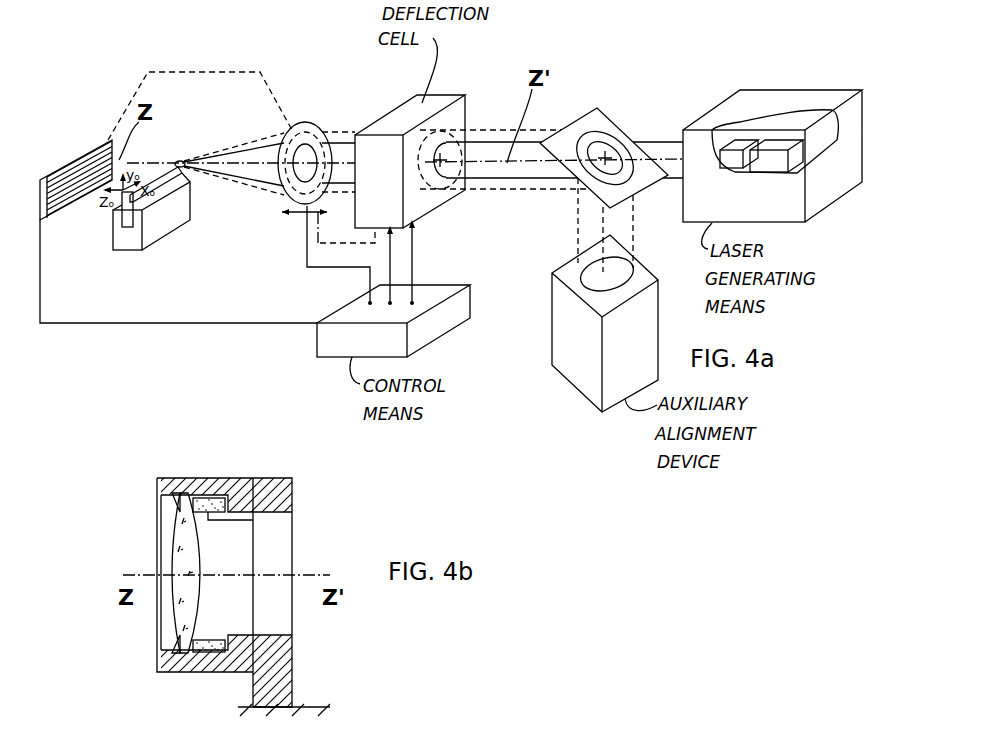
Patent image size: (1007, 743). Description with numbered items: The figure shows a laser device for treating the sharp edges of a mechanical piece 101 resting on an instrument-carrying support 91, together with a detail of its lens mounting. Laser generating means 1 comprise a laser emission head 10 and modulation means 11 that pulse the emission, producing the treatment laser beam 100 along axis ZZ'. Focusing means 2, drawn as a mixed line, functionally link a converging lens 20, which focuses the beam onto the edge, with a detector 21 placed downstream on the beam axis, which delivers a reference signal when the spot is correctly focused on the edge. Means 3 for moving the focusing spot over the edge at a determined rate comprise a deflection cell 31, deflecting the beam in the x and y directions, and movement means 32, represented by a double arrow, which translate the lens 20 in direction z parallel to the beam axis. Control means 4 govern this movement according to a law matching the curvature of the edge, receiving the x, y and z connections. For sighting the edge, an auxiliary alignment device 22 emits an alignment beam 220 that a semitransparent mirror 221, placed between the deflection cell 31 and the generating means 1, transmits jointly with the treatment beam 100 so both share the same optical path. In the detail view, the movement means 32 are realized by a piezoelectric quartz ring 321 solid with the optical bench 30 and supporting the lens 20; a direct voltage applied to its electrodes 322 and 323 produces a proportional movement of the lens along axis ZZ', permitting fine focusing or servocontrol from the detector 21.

In FIG. 4a, the means to generate laser beam 1 is at (746, 100).
In FIG. 4a, the laser emission head 10 is at (776, 141).
In FIG. 4a, the modulation means 11 is at (748, 141).
In FIG. 4a, the laser beam 100 is at (643, 140).
In FIG. 4a, the mechanical piece 101 is at (179, 160).
In FIG. 4a, the focusing means 2 is at (200, 72).
In FIG. 4a, the converging lens 20 is at (297, 128).
In FIG. 4b, the converging lens 20 is at (194, 560).
In FIG. 4a, the detector 21 is at (107, 138).
In FIG. 4a, the auxiliary alignment device 22 is at (622, 331).
In FIG. 4a, the alignment beam 220 is at (578, 245).
In FIG. 4a, the semitransparent mirror 221 is at (641, 194).
In FIG. 4a, the means to assure relative movement 3 is at (325, 266).
In FIG. 4b, the frame or optical bench 30 is at (303, 707).
In FIG. 4a, the deflection cell 31 is at (422, 102).
In FIG. 4a, the movement means 32 is at (283, 205).
In FIG. 4b, the piezoelectric quartz ring 321 is at (200, 638).
In FIG. 4b, the electrode 322 is at (208, 498).
In FIG. 4b, the electrode 323 is at (253, 520).
In FIG. 4a, the control means 4 is at (423, 338).
In FIG. 4a, the instrument-carrying support 91 is at (172, 222).